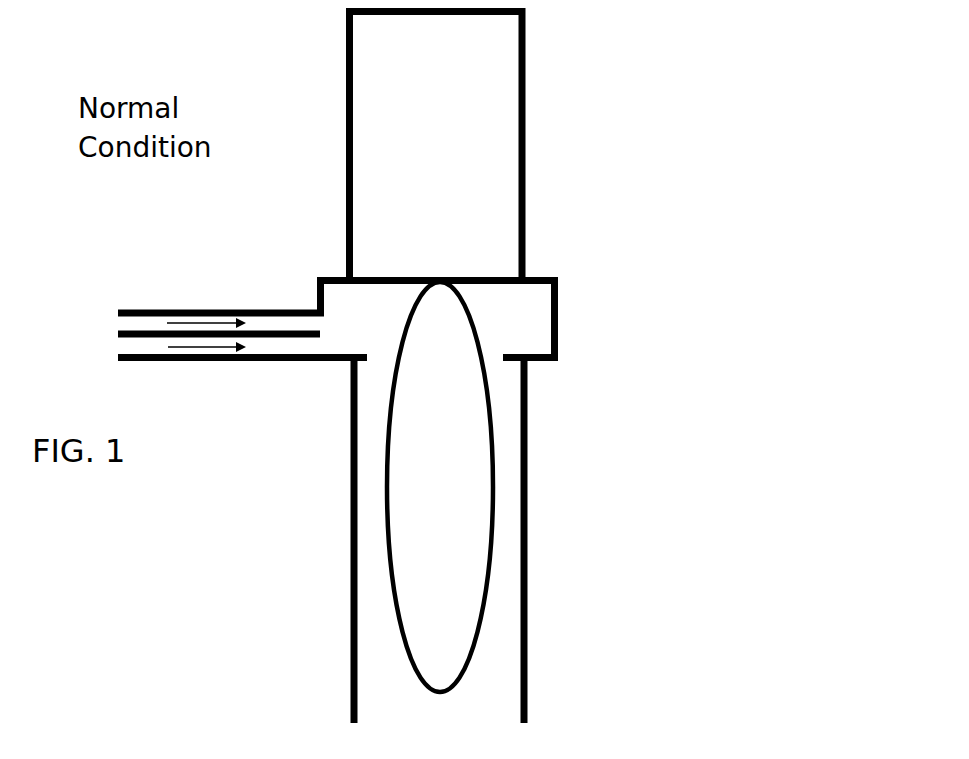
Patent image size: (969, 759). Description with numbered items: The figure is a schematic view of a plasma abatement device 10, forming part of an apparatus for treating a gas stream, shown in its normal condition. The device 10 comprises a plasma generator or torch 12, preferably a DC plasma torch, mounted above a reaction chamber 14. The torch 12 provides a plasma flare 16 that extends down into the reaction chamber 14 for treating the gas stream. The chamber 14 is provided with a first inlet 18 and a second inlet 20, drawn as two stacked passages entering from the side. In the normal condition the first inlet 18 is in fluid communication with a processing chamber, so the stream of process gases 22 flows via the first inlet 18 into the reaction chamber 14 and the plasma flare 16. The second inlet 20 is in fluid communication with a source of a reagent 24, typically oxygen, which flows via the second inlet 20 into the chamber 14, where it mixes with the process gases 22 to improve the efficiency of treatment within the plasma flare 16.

The plasma abatement device 10 is at (237, 518).
The plasma generator 12 is at (480, 182).
The reaction chamber 14 is at (525, 590).
The plasma flare 16 is at (462, 465).
The first inlet 18 is at (269, 322).
The second inlet 20 is at (268, 347).
The process gases 22 is at (163, 314).
The reagent 24 is at (163, 354).